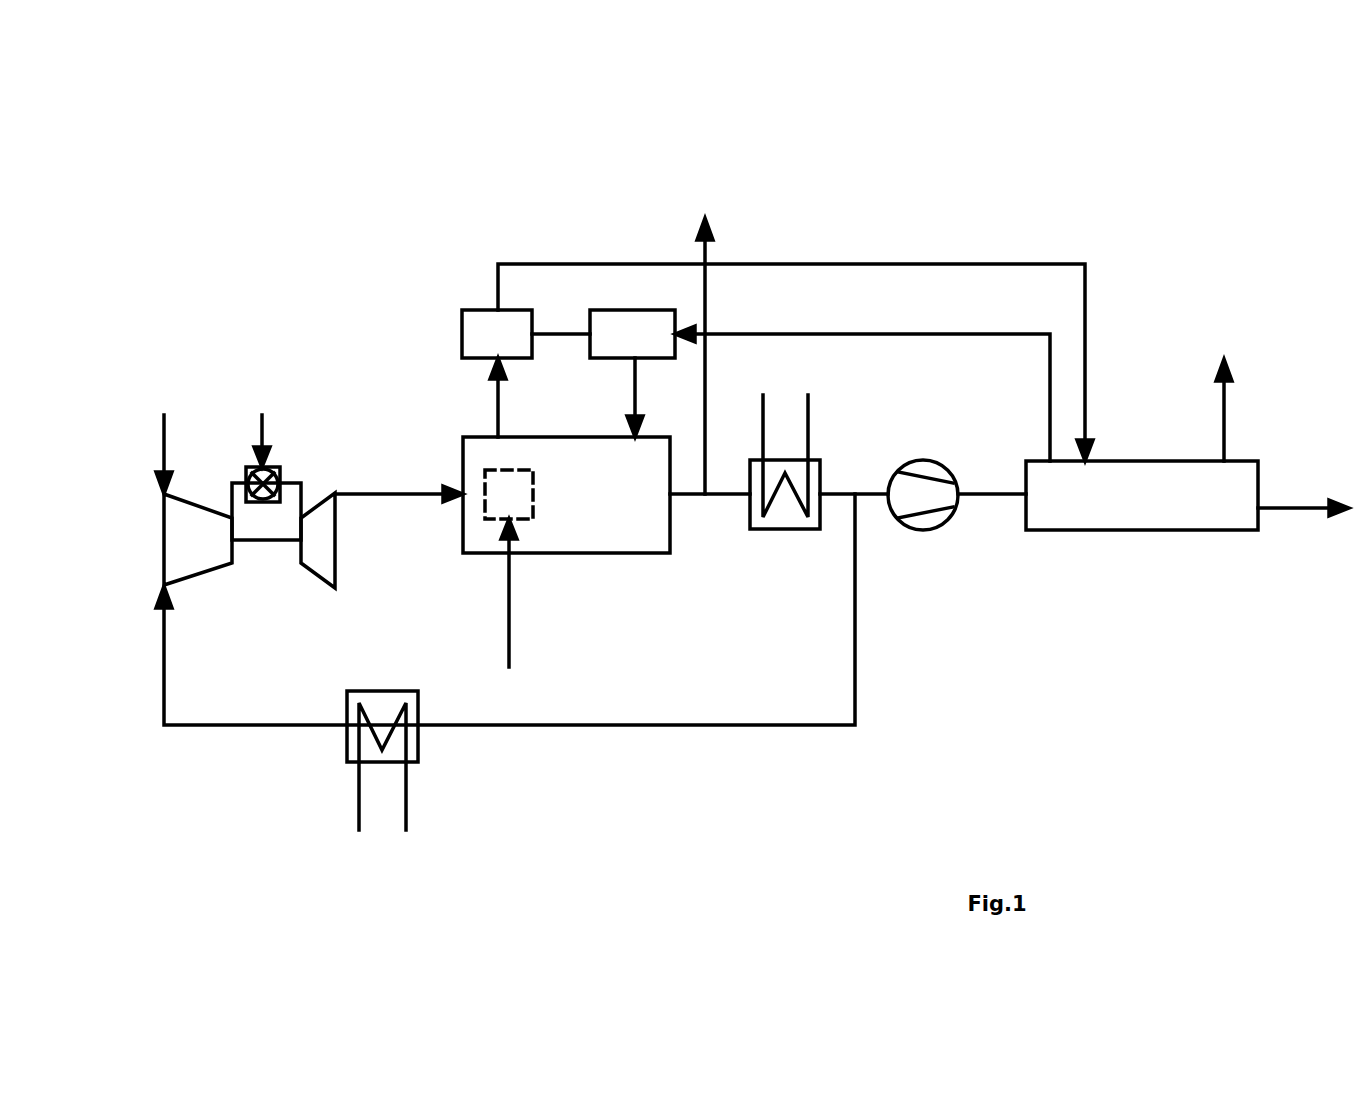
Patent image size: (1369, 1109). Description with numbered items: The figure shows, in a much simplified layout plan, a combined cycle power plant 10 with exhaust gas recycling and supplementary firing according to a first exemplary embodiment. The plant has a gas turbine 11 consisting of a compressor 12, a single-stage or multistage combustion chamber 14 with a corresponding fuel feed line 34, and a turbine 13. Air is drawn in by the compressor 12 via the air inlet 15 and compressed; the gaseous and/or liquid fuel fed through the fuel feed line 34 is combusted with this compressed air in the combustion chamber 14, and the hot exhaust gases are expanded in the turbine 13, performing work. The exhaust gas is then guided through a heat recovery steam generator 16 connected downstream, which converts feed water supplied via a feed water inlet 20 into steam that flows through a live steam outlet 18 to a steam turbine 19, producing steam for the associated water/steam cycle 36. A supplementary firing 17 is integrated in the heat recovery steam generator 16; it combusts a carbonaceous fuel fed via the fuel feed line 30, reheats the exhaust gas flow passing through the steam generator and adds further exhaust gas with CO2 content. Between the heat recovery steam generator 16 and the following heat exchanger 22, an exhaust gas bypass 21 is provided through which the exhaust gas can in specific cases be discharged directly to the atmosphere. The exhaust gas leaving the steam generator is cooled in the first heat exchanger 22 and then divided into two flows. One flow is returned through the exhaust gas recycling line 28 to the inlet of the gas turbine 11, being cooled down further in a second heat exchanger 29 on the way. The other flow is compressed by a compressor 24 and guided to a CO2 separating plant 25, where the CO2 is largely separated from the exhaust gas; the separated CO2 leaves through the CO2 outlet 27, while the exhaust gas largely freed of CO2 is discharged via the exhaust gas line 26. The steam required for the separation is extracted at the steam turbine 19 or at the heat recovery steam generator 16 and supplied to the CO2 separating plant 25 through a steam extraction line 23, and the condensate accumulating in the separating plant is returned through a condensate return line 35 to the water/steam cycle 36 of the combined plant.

The combined cycle power plant 10 is at (706, 517).
The gas turbine 11 is at (237, 494).
The compressor 12 is at (175, 540).
The turbine 13 is at (323, 552).
The combustion chamber 14 is at (277, 467).
The air inlet 15 is at (164, 437).
The heat recovery steam generator 16 is at (635, 553).
The supplementary firing 17 is at (508, 495).
The live steam outlet 18 is at (497, 402).
The steam turbine 19 is at (463, 327).
The feed water inlet 20 is at (633, 402).
The exhaust gas bypass 21 is at (703, 285).
The heat exchanger 22 is at (797, 473).
The steam extraction line 23 is at (820, 264).
The compressor 24 is at (933, 518).
The CO2 separating plant 25 is at (1151, 531).
The exhaust gas line 26 is at (1226, 401).
The CO2 outlet 27 is at (1293, 511).
The exhaust gas recycling line 28 is at (807, 725).
The heat exchanger 29 is at (345, 750).
The fuel feed line 30 is at (510, 622).
The fuel feed line 34 is at (262, 430).
The condensate return line 35 is at (958, 334).
The water/steam cycle 36 is at (592, 310).